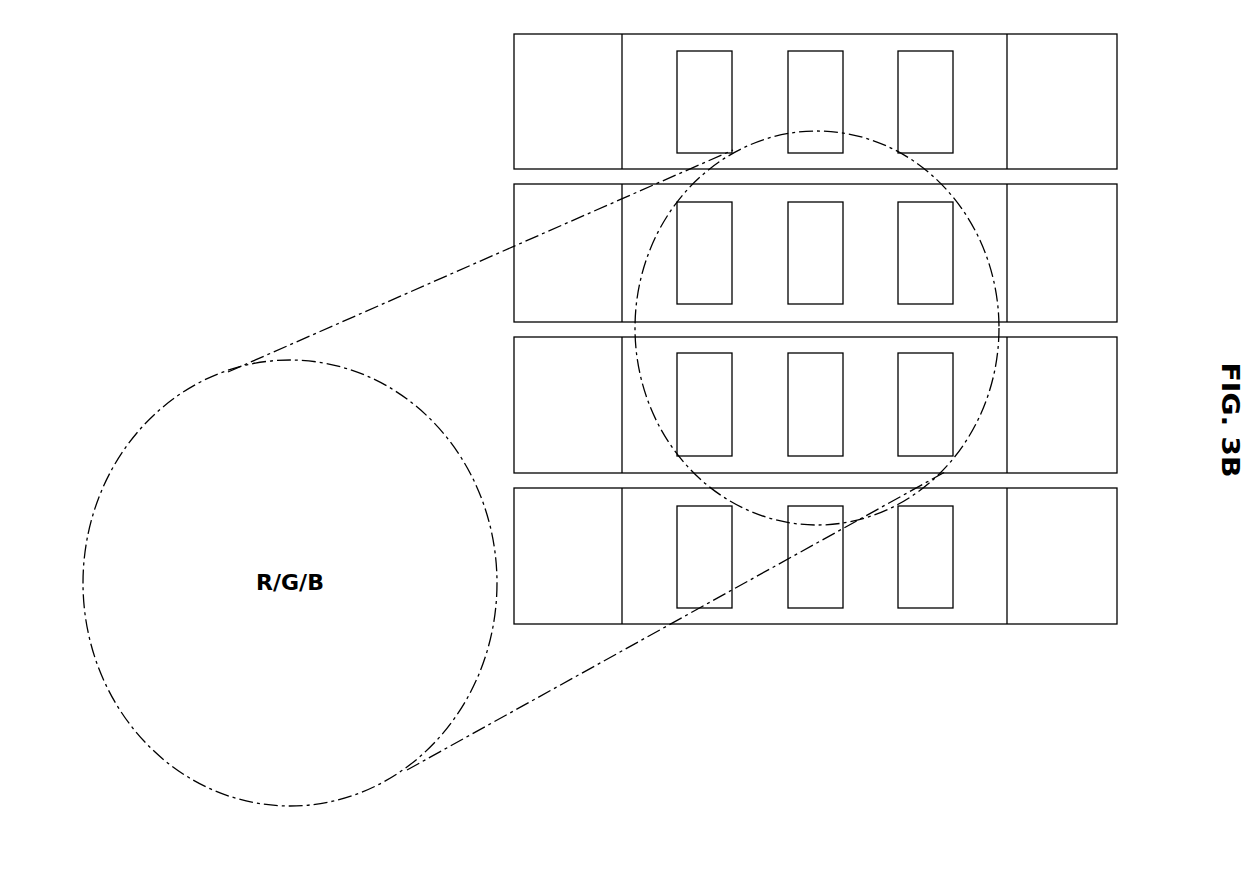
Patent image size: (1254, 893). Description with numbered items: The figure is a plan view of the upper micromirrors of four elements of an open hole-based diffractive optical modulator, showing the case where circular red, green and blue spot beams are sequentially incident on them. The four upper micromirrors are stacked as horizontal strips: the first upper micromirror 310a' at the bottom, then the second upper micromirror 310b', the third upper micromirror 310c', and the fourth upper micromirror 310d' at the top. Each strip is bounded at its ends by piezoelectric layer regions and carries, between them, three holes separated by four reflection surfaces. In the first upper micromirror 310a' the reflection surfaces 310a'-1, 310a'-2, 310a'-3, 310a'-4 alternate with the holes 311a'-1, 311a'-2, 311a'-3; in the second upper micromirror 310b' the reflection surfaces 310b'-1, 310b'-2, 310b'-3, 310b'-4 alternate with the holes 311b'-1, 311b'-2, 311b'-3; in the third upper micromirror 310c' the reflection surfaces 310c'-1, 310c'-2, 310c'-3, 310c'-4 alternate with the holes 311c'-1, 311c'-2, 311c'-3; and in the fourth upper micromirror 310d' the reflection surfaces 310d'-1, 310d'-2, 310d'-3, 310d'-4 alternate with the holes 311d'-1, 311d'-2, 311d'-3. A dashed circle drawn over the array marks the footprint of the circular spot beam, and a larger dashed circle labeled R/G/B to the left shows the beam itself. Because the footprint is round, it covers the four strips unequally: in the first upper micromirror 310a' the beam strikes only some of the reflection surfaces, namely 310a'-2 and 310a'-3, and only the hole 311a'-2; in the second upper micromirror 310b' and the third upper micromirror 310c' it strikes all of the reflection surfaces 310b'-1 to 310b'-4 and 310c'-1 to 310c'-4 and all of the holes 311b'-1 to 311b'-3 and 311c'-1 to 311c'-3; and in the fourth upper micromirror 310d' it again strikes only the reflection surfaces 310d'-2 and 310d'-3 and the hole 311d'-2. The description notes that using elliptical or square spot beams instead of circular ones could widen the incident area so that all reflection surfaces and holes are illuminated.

The first upper micromirror 310a' is at (849, 556).
The second upper micromirror 310b' is at (850, 405).
The third upper micromirror 310c' is at (849, 253).
The fourth upper micromirror 310d' is at (850, 101).
The hole 311a'-1 is at (704, 557).
The hole 311a'-2 is at (815, 557).
The hole 311a'-3 is at (925, 557).
The hole 311b'-1 is at (704, 404).
The hole 311b'-2 is at (815, 404).
The hole 311b'-3 is at (925, 404).
The hole 311c'-1 is at (704, 253).
The hole 311c'-2 is at (815, 253).
The hole 311c'-3 is at (925, 253).
The hole 311d'-1 is at (704, 102).
The hole 311d'-2 is at (815, 102).
The hole 311d'-3 is at (925, 102).
The reflection surface 310a'-1 is at (649, 556).
The reflection surface 310a'-2 is at (760, 556).
The reflection surface 310a'-3 is at (870, 556).
The reflection surface 310a'-4 is at (980, 556).
The reflection surface 310b'-1 is at (649, 405).
The reflection surface 310b'-2 is at (760, 405).
The reflection surface 310b'-3 is at (870, 405).
The reflection surface 310b'-4 is at (980, 405).
The reflection surface 310c'-1 is at (649, 253).
The reflection surface 310c'-2 is at (760, 253).
The reflection surface 310c'-3 is at (870, 253).
The reflection surface 310c'-4 is at (980, 253).
The reflection surface 310d'-1 is at (649, 101).
The reflection surface 310d'-2 is at (760, 101).
The reflection surface 310d'-3 is at (870, 101).
The reflection surface 310d'-4 is at (980, 101).